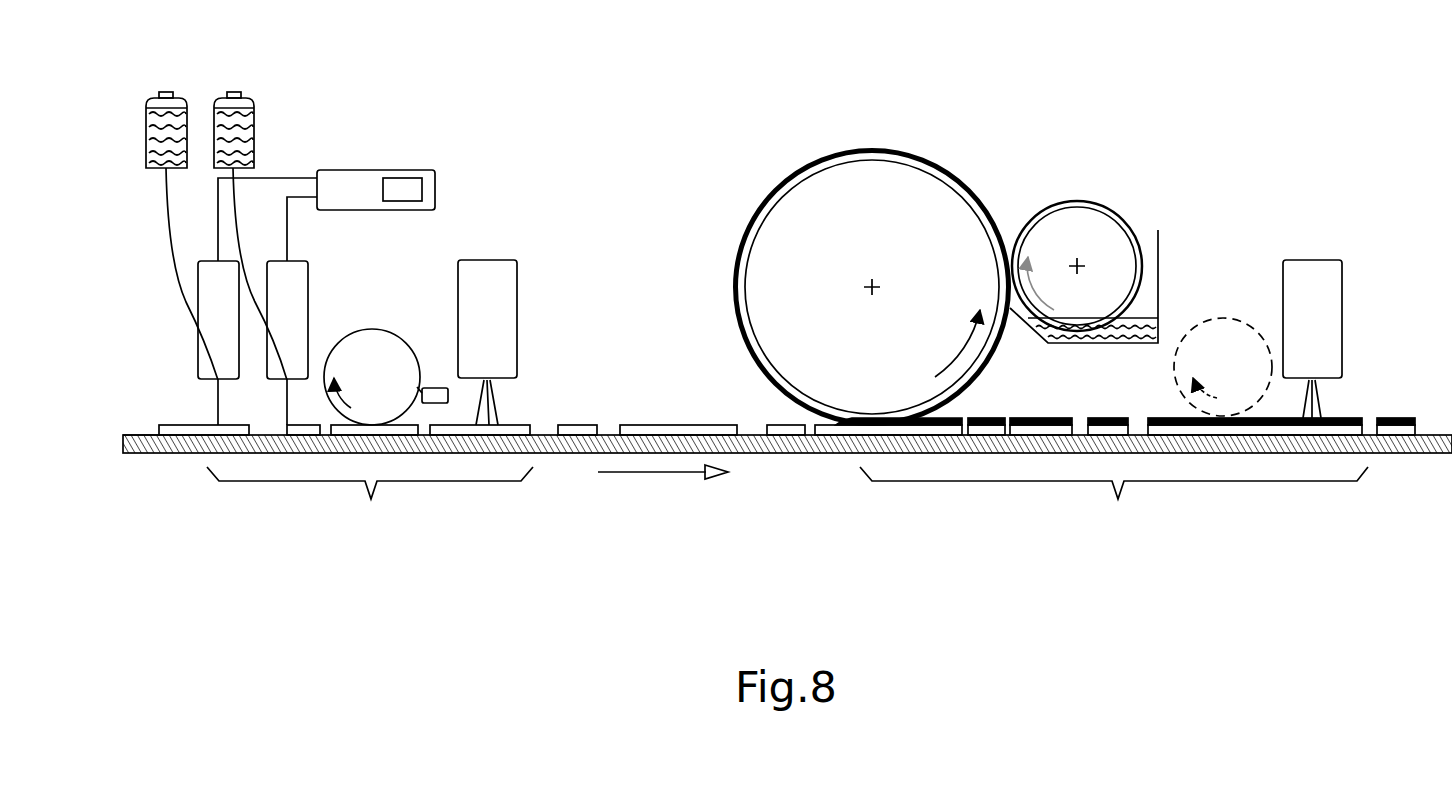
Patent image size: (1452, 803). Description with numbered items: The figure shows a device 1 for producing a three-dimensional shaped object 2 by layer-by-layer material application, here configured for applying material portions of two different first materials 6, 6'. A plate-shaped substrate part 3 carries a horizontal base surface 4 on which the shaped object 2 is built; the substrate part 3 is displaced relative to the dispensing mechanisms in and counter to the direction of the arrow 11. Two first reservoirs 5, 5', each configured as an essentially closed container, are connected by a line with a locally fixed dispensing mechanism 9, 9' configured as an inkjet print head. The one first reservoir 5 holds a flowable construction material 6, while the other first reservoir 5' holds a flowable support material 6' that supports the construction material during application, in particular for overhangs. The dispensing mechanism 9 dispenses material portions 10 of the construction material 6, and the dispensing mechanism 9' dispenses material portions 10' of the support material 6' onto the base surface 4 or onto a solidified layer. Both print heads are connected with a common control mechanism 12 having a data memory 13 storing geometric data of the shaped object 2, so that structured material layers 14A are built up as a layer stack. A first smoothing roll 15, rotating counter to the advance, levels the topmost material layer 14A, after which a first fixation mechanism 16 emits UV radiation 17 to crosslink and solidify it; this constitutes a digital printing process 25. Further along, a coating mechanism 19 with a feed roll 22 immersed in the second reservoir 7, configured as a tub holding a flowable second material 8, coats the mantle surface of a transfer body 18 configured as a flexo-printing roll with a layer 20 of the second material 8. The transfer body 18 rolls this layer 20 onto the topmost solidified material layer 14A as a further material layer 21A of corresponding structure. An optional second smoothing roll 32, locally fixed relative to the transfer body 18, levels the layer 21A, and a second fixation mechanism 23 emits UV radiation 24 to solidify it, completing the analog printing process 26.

The device 1 is at (1214, 629).
The three-dimensional shaped object 2 is at (1277, 414).
The substrate part 3 is at (770, 447).
The base surface 4 is at (152, 428).
The first reservoir 5 is at (255, 111).
The first reservoir 5' is at (144, 111).
The first material 6 is at (258, 138).
The first material 6' is at (140, 138).
The second reservoir 7 is at (1159, 302).
The second material 8 is at (1093, 344).
The dispensing mechanism 9 is at (287, 320).
The dispensing mechanism 9' is at (218, 320).
The material portions 10 is at (305, 400).
The material portions 10' is at (193, 400).
The arrow 11 is at (663, 486).
The control mechanism 12 is at (352, 170).
The data memory 13 is at (402, 178).
The material layer 14A is at (782, 428).
The first smoothing roll 15 is at (358, 390).
The first fixation mechanism 16 is at (473, 332).
The UV radiation 17 is at (495, 408).
The transfer body 18 is at (945, 175).
The coating mechanism 19 is at (1174, 207).
The layer 20 is at (900, 150).
The further material layer 21A is at (958, 418).
The feed roll 22 is at (1076, 201).
The second fixation mechanism 23 is at (1298, 332).
The UV radiation 24 is at (1320, 406).
The digital printing process 25 is at (370, 501).
The analog printing process 26 is at (1114, 502).
The second smoothing roll 32 is at (1209, 380).